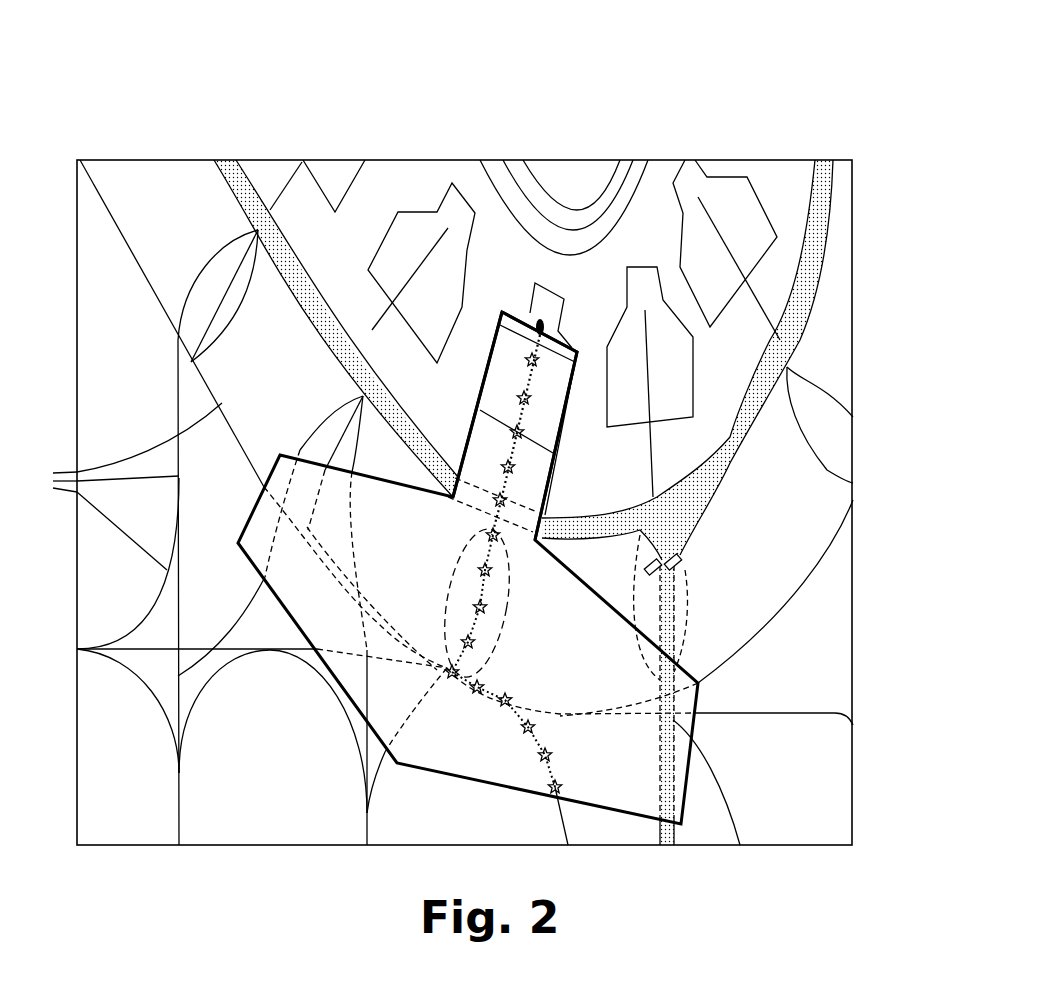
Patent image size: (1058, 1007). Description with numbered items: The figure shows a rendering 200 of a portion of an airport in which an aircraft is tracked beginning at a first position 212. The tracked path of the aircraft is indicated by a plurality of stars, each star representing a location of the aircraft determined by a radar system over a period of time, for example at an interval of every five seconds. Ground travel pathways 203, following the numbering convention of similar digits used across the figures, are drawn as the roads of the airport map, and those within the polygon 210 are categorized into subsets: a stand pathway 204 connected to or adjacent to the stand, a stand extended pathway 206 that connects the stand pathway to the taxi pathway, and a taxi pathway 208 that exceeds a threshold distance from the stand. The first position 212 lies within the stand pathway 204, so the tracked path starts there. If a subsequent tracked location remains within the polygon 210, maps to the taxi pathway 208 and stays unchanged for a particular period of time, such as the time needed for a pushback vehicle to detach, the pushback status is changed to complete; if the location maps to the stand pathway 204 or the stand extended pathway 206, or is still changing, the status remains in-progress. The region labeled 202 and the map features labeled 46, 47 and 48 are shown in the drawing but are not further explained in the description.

The rendering 200 is at (710, 72).
The first viewport region 202 is at (521, 283).
The roads 203 is at (47, 482).
The stand pathway 204 is at (541, 419).
The stand extended pathway 206 is at (516, 614).
The taxi pathway 208 is at (546, 722).
The polygon 210 is at (700, 697).
The first position 212 is at (547, 373).
The road 46 is at (553, 207).
The road 47 is at (568, 206).
The road 48 is at (589, 198).